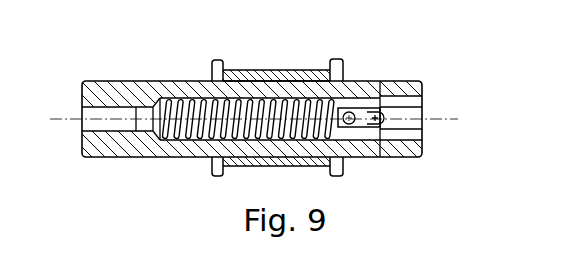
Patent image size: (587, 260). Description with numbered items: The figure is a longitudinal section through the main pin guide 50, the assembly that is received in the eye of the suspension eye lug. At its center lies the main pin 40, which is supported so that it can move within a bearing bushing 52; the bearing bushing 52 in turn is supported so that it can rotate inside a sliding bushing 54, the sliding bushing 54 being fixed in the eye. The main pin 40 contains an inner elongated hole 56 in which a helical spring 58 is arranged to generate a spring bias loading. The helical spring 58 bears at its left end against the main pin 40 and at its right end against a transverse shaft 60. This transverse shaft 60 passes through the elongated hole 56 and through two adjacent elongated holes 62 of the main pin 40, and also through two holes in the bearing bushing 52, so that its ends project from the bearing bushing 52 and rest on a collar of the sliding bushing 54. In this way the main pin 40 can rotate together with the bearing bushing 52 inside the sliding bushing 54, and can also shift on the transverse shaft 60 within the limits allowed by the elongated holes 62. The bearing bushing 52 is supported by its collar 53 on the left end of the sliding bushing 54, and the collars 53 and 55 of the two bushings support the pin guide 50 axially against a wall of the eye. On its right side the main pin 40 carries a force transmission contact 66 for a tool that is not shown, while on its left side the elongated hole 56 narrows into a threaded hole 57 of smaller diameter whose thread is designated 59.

The main pin 40 is at (155, 96).
The main pin guide 50 is at (395, 165).
The bearing bushing 52 is at (217, 62).
The collar 53 is at (219, 176).
The sliding bushing 54 is at (330, 60).
The collar 55 is at (340, 176).
The elongated hole 56 is at (187, 142).
The threaded hole 57 is at (95, 118).
The helical spring 58 is at (198, 97).
The thread 59 is at (127, 107).
The transverse shaft 60 is at (349, 112).
The elongated holes 62 is at (370, 110).
The force transmission contact 66 is at (415, 107).